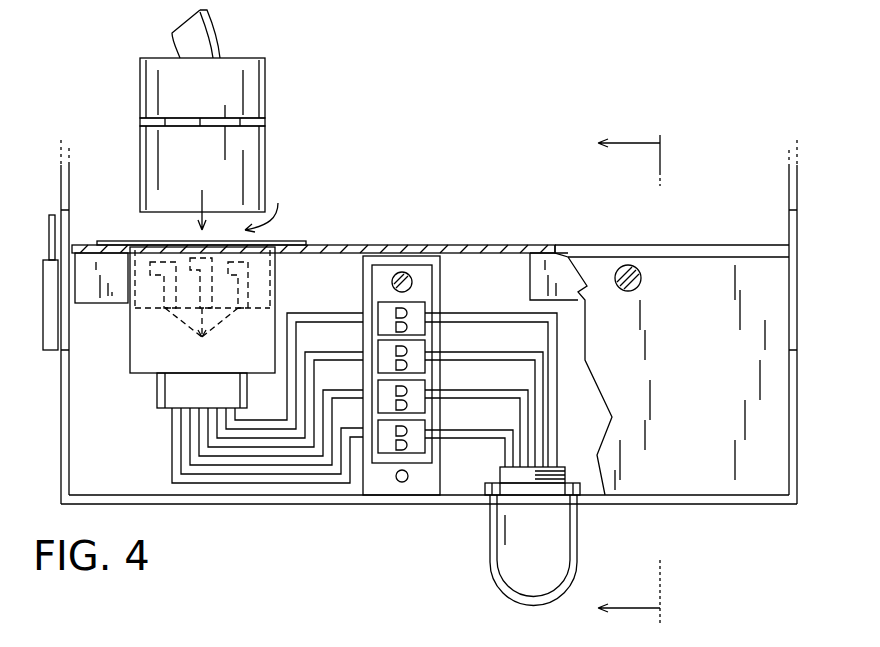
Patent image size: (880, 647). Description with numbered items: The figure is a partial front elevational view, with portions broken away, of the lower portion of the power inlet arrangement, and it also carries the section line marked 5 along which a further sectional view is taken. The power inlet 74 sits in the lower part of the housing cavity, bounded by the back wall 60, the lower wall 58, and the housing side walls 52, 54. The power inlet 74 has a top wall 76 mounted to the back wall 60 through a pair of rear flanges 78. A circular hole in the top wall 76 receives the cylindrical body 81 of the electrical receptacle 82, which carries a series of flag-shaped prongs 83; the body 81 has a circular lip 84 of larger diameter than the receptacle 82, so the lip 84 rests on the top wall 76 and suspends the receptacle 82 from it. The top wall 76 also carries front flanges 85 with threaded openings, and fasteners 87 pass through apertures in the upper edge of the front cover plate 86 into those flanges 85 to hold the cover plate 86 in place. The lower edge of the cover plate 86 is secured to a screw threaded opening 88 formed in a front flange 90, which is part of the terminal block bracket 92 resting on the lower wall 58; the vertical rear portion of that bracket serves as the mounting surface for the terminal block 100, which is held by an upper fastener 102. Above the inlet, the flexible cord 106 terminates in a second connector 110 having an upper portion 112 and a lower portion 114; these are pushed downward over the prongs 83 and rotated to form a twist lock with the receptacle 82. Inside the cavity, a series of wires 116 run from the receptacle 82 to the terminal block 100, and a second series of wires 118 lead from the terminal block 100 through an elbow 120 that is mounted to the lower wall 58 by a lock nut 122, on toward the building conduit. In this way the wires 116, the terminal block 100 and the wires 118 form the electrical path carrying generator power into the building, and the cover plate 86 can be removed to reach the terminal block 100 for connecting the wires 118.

The section line 5- 5 is at (639, 379).
The mounting bracket 52 is at (61, 451).
The housing side wall 54 is at (793, 405).
The lower wall 58 is at (275, 500).
The back wall 60 is at (93, 218).
The power inlet 74 is at (727, 230).
The top wall 76 is at (507, 248).
The rear flanges 78 is at (100, 283).
The cylindrical body 81 is at (153, 352).
The electrical receptacle 82 is at (147, 385).
The flag-shaped prongs 83 is at (202, 308).
The circular lip 84 is at (288, 243).
The front flanges 85 is at (588, 302).
The front cover plate 86 is at (765, 327).
The fasteners 87 is at (652, 290).
The screw threaded opening 88 is at (398, 482).
The front flange 90 is at (425, 487).
The terminal block bracket 92 is at (438, 488).
The terminal block 100 is at (420, 268).
The upper fastener 102 is at (405, 272).
The flexible cord 106 is at (202, 28).
The second connector 110 is at (198, 121).
The upper portion 112 is at (153, 93).
The lower portion 114 is at (250, 170).
The wires 116 is at (230, 460).
The wires 118 is at (488, 315).
The elbow 120 is at (560, 532).
The lock nut 122 is at (580, 488).